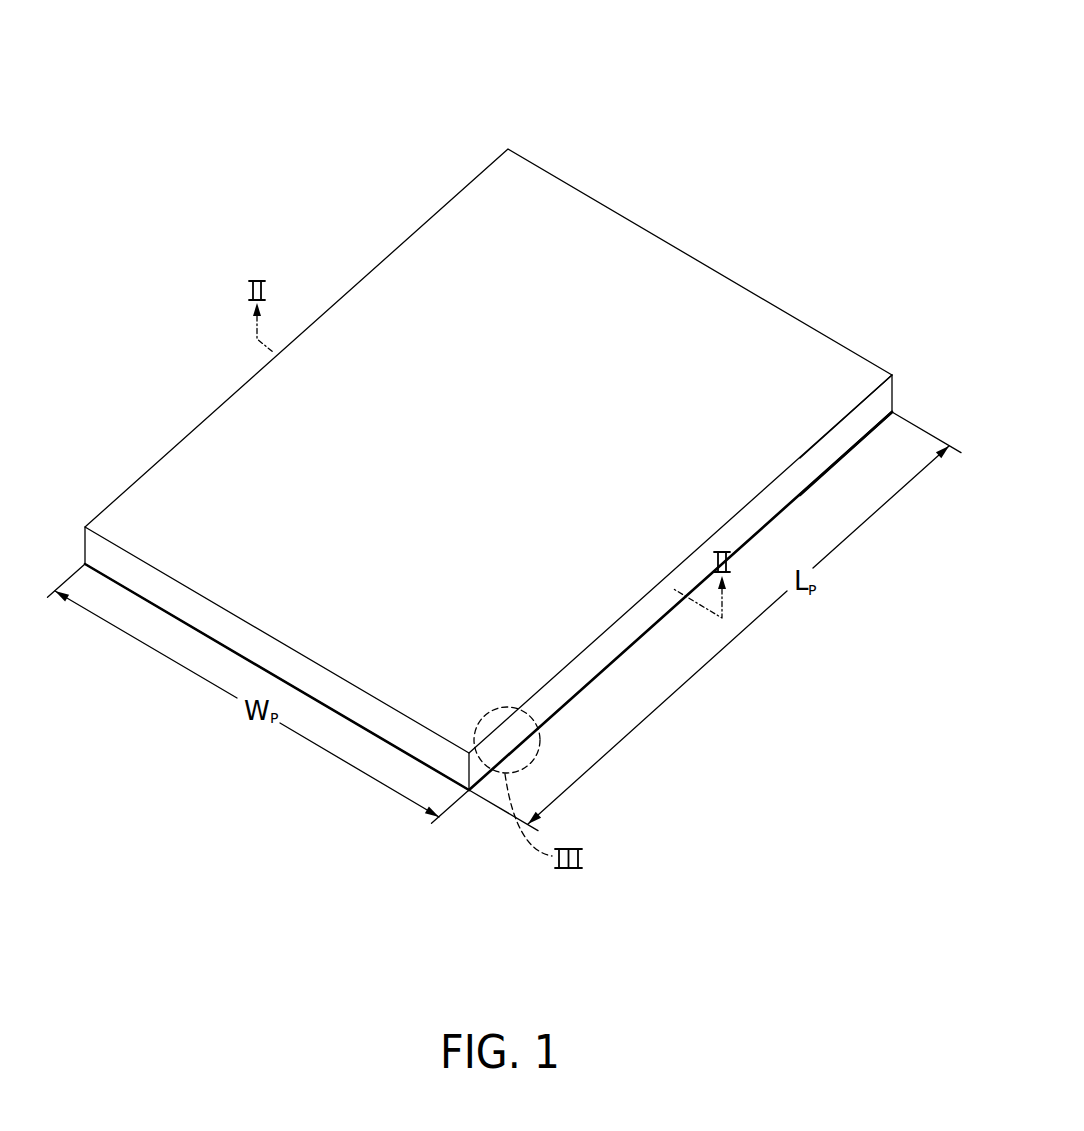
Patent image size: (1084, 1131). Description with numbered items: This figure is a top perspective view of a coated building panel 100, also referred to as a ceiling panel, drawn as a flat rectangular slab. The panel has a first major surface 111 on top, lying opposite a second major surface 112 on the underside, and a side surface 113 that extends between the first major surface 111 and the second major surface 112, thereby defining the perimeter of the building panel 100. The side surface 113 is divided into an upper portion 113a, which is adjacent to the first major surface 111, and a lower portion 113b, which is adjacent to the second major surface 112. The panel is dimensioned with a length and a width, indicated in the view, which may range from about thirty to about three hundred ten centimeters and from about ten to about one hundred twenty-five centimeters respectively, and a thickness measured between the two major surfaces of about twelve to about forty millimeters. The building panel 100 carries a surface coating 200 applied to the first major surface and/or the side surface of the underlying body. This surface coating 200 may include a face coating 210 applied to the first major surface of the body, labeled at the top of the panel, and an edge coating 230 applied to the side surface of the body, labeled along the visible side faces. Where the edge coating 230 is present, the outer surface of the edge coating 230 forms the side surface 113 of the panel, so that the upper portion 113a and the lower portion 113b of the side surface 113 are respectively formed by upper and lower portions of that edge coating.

The coated building panel 100 is at (679, 162).
The first major surface 111 is at (372, 310).
The second major surface 112 is at (550, 723).
The side surface 113 is at (358, 708).
The upper portion 113a is at (856, 418).
The lower portion 113b is at (873, 428).
The surface coating 200 is at (514, 419).
The face coating 210 is at (555, 257).
The edge coating 230 is at (213, 625).